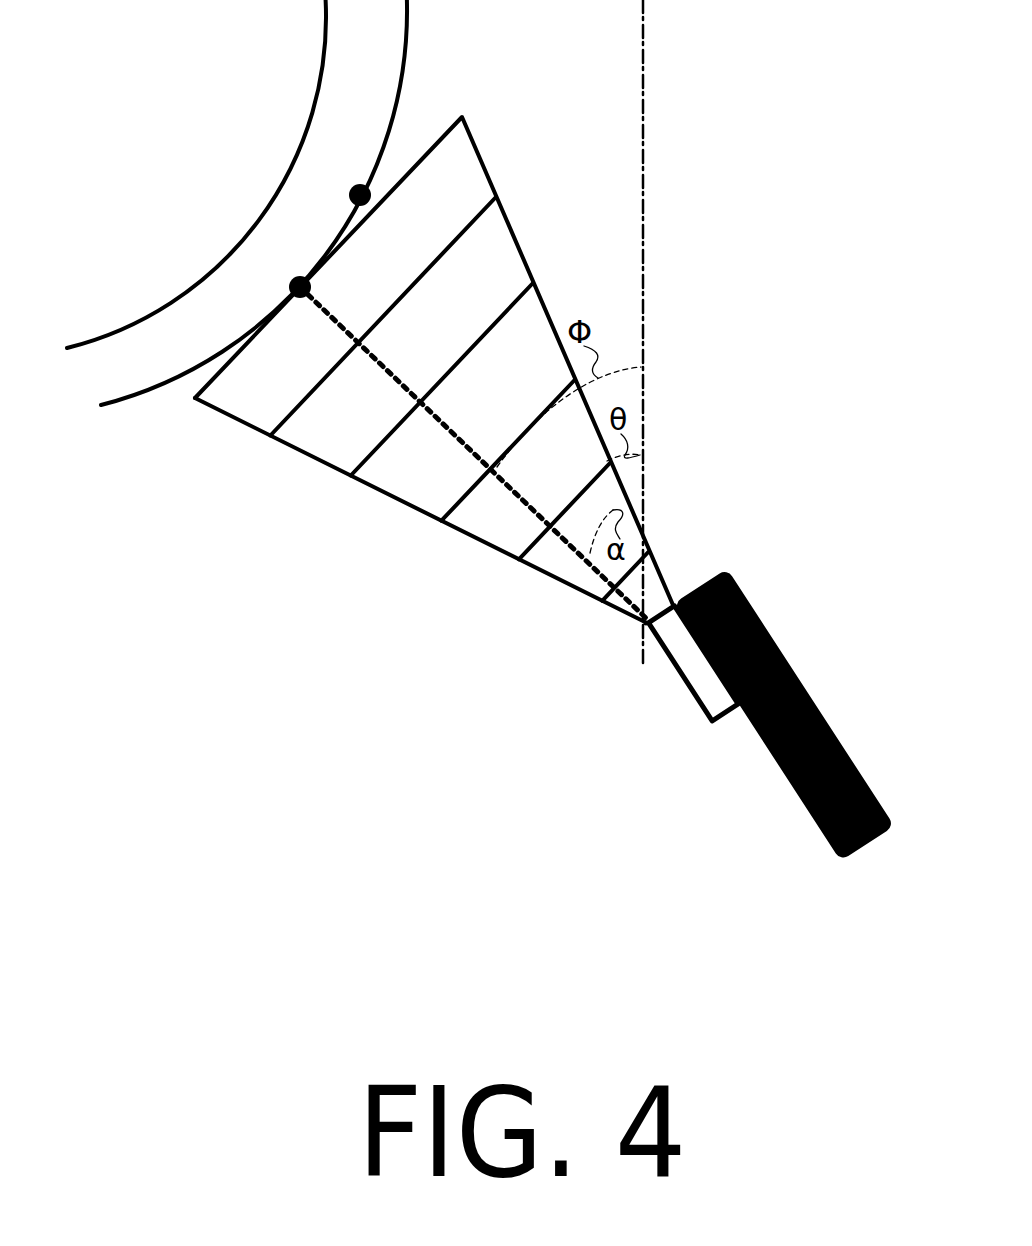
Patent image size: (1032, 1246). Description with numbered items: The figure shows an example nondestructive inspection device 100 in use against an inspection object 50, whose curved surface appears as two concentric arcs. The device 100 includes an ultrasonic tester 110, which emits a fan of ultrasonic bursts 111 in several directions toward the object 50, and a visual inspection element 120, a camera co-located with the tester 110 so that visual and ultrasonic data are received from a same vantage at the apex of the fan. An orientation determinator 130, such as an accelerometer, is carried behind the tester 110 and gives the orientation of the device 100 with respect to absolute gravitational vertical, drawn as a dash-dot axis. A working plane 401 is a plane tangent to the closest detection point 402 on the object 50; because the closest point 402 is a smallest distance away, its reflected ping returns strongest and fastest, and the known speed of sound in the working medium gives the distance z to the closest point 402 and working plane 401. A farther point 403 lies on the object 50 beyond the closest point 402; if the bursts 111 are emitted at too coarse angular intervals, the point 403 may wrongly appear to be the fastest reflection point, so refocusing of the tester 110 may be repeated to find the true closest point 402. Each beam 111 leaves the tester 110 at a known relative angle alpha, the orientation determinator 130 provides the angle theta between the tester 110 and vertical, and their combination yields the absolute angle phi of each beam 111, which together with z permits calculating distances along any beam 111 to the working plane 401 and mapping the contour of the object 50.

The inspection object 50 is at (155, 345).
The nondestructive inspection device 100 is at (812, 191).
The ultrasonic tester 110 is at (686, 692).
The ultrasonic bursts 111 is at (567, 360).
The visual inspection element 120 is at (645, 625).
The orientation determinator 130 is at (793, 657).
The working plane 401 is at (462, 117).
The closest detection point 402 is at (300, 287).
The farther point 403 is at (358, 194).